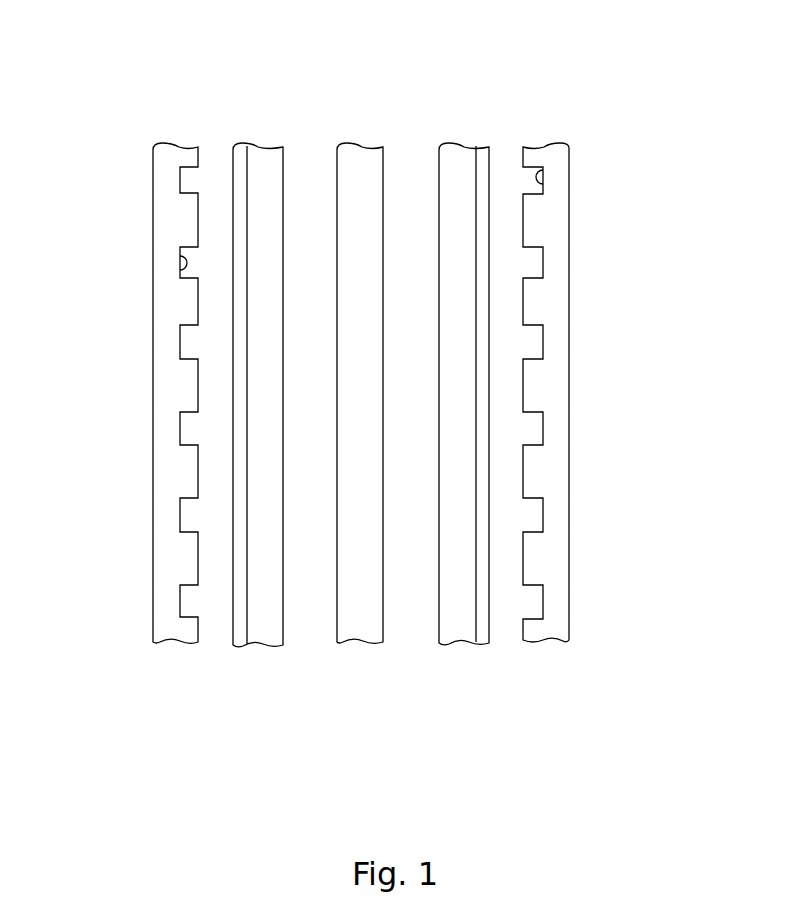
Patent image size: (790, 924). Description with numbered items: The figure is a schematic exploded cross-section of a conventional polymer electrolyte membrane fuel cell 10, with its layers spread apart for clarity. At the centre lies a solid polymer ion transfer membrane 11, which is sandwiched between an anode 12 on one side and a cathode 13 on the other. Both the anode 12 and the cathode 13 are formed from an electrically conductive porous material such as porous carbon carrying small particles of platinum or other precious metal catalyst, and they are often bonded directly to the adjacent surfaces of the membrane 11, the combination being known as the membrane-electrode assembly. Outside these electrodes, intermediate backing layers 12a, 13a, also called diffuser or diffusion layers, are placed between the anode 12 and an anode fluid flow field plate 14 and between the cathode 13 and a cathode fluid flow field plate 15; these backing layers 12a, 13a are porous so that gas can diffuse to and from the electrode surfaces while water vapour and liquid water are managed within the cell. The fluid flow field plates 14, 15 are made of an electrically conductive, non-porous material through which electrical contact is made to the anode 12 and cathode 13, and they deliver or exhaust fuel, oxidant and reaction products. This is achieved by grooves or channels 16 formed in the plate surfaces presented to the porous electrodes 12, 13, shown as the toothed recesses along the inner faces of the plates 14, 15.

The fuel cell 10 is at (160, 117).
The solid polymer ion transfer membrane 11 is at (367, 628).
The anode 12 is at (247, 392).
The intermediate backing layer 12a is at (242, 150).
The cathode 13 is at (473, 384).
The intermediate backing layer 13a is at (482, 158).
The anode fluid flow field plate 14 is at (160, 628).
The cathode fluid flow field plate 15 is at (552, 627).
The grooves or channels 16 is at (182, 258).